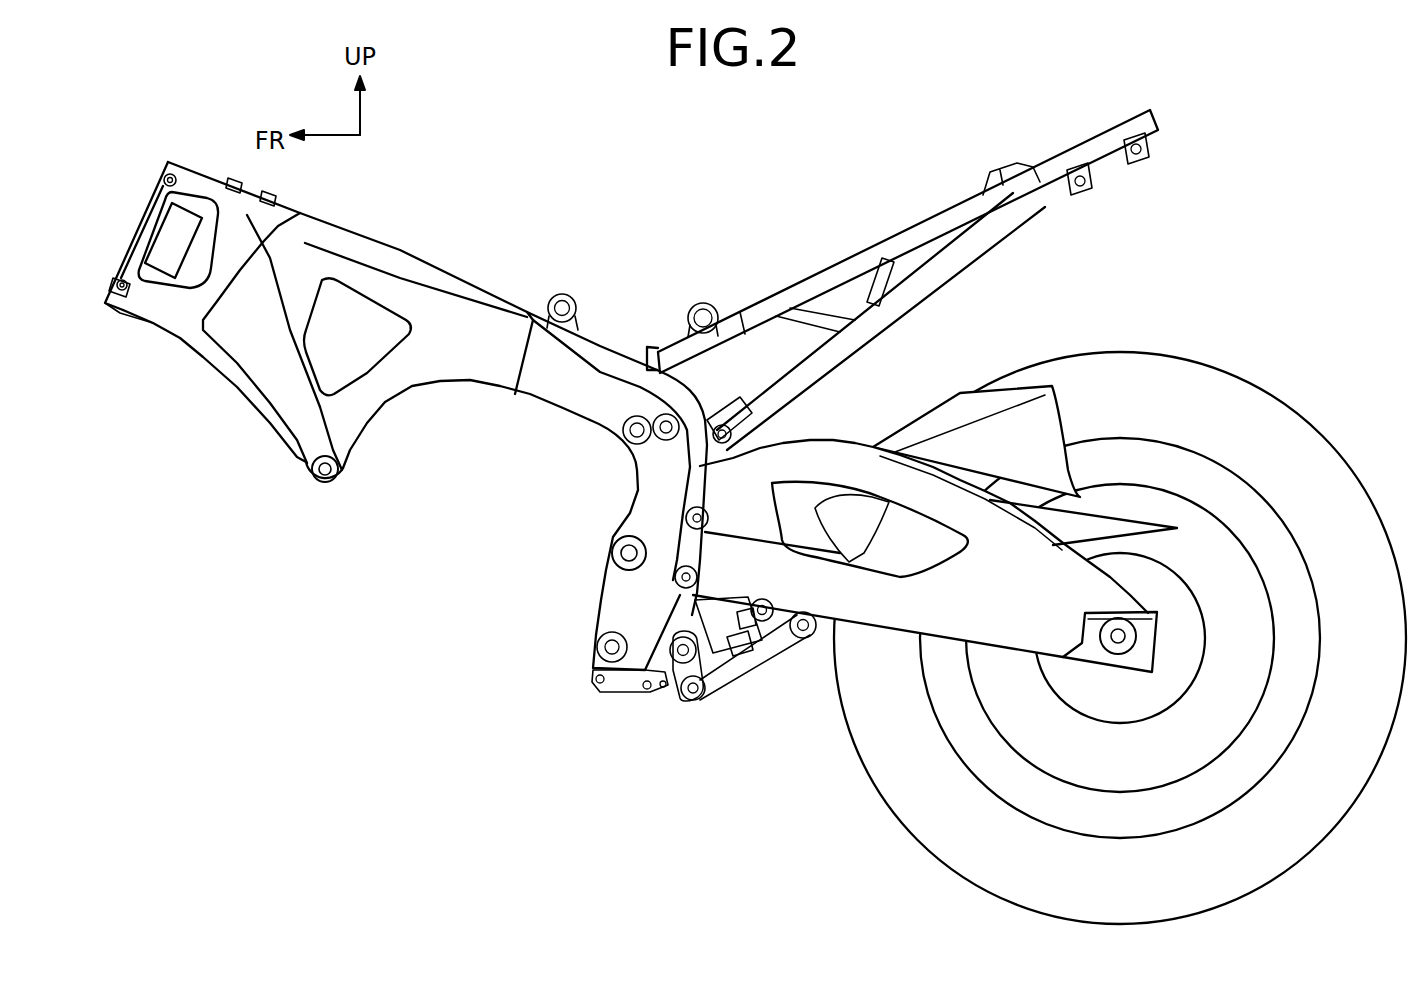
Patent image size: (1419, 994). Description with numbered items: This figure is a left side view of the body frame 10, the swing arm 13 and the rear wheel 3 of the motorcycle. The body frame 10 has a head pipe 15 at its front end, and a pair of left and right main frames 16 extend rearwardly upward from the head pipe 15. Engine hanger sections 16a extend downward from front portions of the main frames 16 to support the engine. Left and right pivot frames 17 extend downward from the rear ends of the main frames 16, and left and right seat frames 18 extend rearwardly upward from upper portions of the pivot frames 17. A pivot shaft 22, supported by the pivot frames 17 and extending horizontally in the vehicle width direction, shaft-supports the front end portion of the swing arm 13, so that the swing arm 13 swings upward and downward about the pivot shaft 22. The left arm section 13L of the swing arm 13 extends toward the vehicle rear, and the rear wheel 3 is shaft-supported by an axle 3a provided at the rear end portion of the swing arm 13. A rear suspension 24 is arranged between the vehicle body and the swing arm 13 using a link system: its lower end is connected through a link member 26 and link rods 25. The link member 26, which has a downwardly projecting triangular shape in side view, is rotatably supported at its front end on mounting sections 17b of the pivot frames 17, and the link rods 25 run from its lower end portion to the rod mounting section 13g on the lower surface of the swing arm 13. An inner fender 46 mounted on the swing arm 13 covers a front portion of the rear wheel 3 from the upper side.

The rear wheel 3 is at (1354, 814).
The axle 3a is at (1117, 656).
The body frame 10 is at (456, 262).
The swing arm 13 is at (889, 644).
The left arm section 13L is at (1011, 602).
The rod mounting section 13g is at (794, 611).
The head pipe 15 is at (133, 220).
The main frame 16 is at (500, 280).
The engine hanger section 16a is at (303, 482).
The pivot frame 17 is at (632, 485).
The mounting section 17b is at (675, 683).
The seat frame 18 is at (857, 256).
The pivot shaft 22 is at (627, 558).
The rear suspension 24 is at (716, 612).
The link rod 25 is at (780, 655).
The link member 26 is at (697, 665).
The inner fender 46 is at (961, 390).